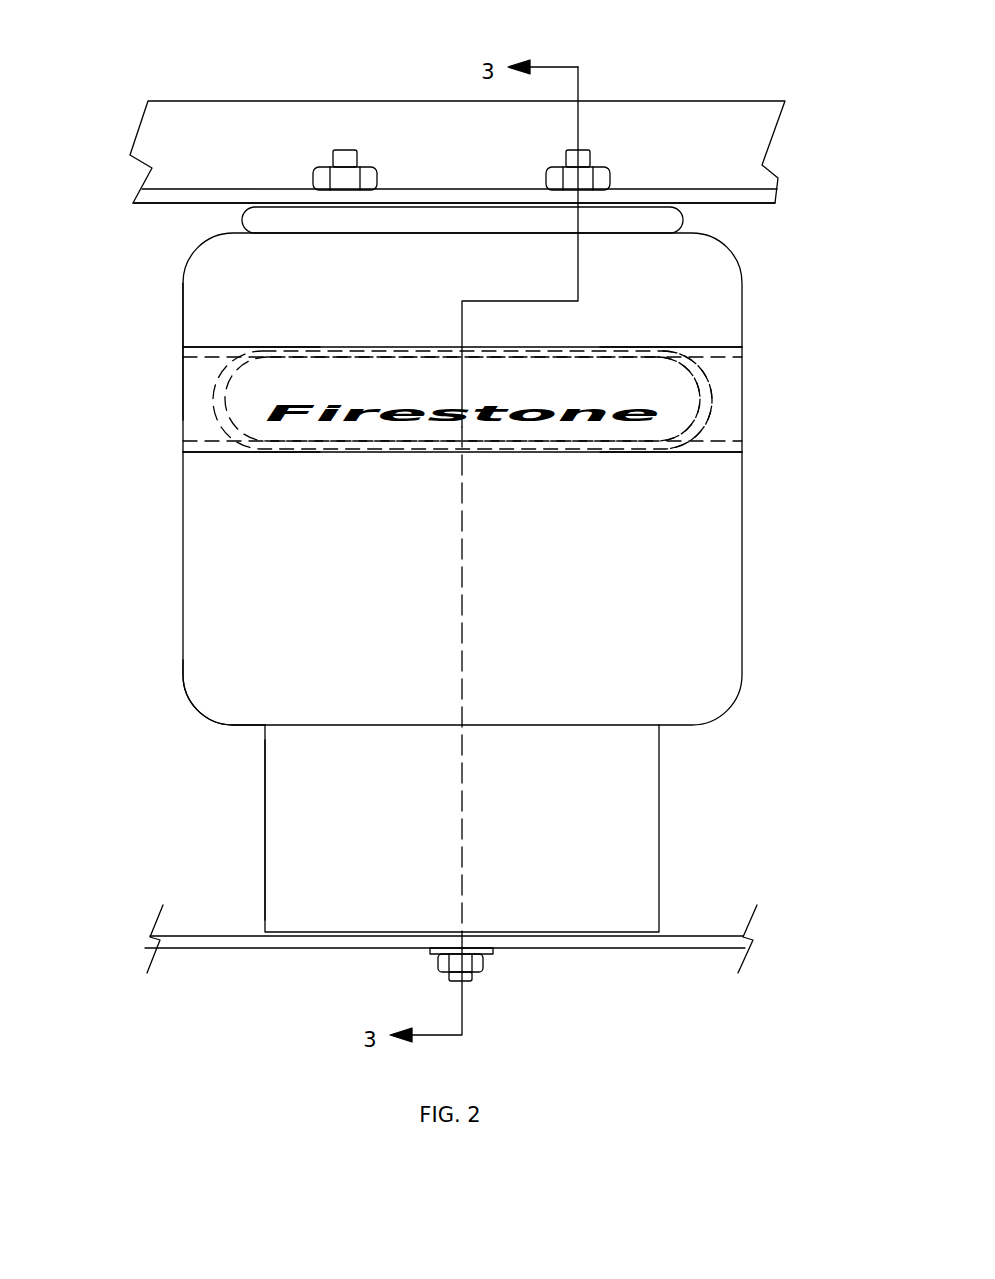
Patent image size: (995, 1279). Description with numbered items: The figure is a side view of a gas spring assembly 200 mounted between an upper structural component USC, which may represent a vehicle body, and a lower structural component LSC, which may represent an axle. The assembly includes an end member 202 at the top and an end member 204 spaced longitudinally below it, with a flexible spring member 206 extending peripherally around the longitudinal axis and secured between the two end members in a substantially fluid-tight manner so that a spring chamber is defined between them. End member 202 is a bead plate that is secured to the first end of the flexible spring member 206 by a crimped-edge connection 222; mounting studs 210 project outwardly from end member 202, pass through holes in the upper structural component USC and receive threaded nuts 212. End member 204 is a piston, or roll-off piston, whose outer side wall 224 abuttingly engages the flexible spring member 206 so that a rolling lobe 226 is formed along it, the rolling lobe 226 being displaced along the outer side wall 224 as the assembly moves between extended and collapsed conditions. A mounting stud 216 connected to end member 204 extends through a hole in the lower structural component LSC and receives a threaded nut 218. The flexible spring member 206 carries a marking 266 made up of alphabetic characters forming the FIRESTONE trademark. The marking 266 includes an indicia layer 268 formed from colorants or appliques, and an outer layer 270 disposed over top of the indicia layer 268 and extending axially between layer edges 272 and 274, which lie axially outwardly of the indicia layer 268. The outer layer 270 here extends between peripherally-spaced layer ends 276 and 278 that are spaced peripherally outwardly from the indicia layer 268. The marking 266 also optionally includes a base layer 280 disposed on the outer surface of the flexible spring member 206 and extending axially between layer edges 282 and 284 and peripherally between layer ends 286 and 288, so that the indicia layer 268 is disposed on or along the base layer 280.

The upper structural component USC is at (208, 122).
The lower structural component LSC is at (218, 948).
The gas spring assembly 200 is at (765, 240).
The end member 202 is at (660, 205).
The end member 204 is at (685, 797).
The flexible spring member 206 is at (745, 553).
The mounting studs 210 is at (332, 152).
The threaded nuts 212 is at (368, 177).
The mounting stud 216 is at (472, 976).
The threaded nut 218 is at (485, 962).
The crimped-edge connection 222 is at (243, 215).
The outer side wall 224 is at (265, 853).
The rolling lobe 226 is at (222, 727).
The marking 266 is at (248, 308).
The indicia layer 268 is at (368, 366).
The outer layer 270 is at (220, 449).
The layer edge 272 is at (717, 347).
The layer edge 274 is at (717, 453).
The layer end 276 is at (213, 410).
The layer end 278 is at (705, 375).
The base layer 280 is at (218, 348).
The layer edge 282 is at (600, 355).
The layer edge 284 is at (588, 443).
The layer end 286 is at (223, 392).
The layer end 288 is at (712, 422).